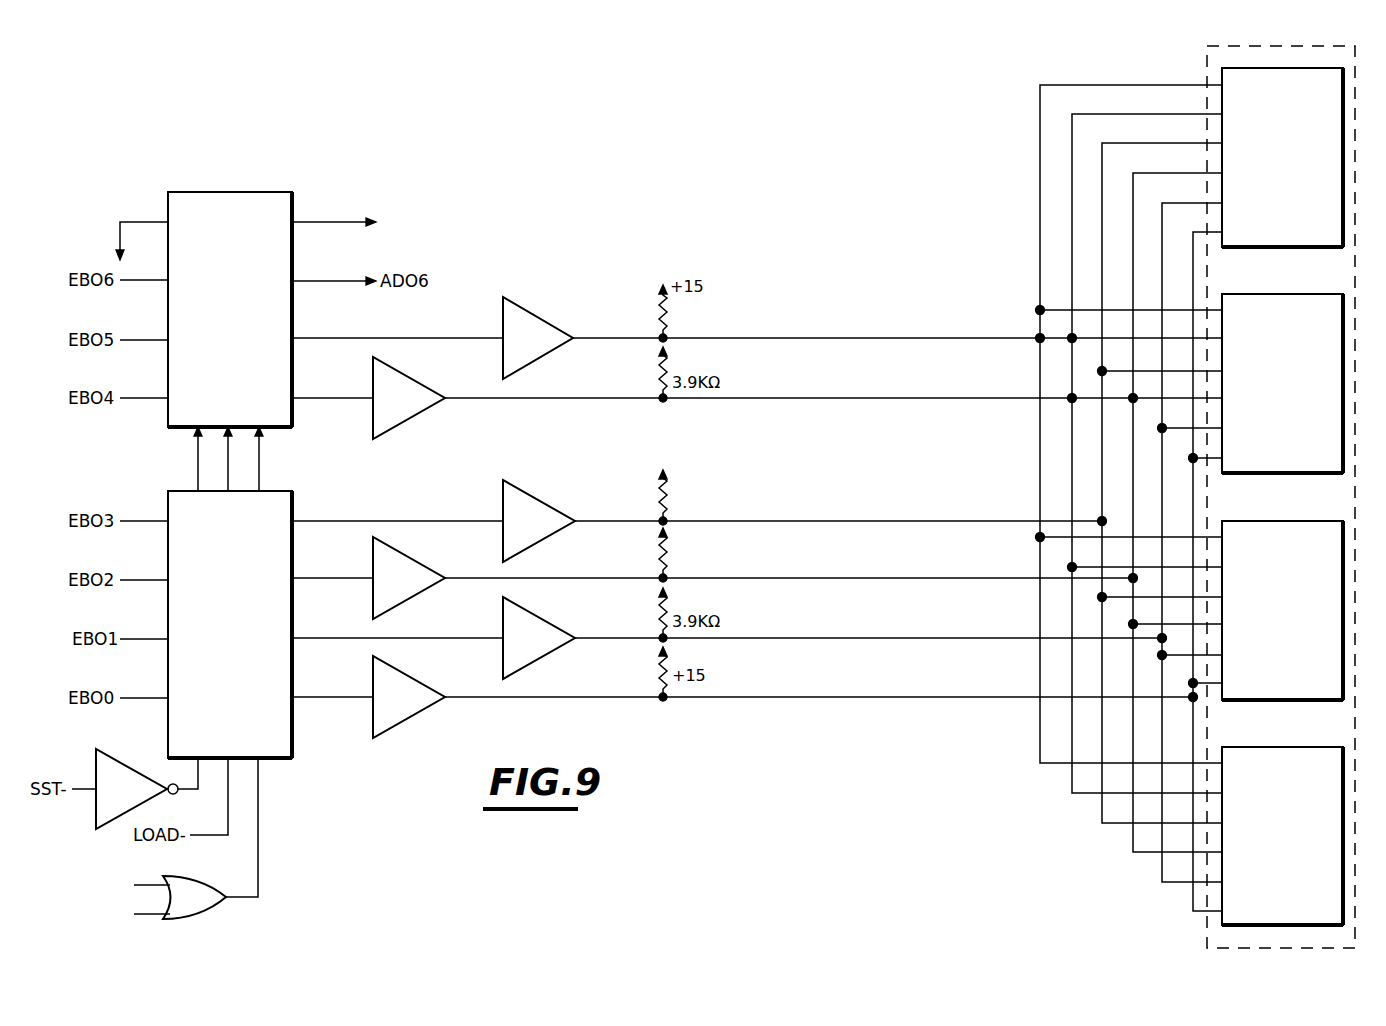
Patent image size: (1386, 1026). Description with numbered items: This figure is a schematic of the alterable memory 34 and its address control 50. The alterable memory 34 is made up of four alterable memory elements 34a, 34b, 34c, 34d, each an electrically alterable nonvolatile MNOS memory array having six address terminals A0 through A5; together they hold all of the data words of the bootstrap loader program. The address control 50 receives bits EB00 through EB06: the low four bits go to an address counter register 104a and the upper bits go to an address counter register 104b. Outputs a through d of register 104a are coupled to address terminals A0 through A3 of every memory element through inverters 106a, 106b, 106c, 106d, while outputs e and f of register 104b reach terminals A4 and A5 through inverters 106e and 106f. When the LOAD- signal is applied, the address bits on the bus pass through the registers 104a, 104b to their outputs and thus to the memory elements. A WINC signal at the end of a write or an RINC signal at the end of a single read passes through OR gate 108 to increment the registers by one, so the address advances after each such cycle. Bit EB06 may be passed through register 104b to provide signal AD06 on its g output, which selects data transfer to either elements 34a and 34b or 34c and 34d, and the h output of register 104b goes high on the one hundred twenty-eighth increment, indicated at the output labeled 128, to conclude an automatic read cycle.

The alterable memory 34 is at (1205, 56).
The alterable memory element 34a is at (1296, 168).
The alterable memory element 34b is at (1296, 396).
The alterable memory element 34c is at (1296, 620).
The alterable memory element 34d is at (1296, 850).
The address control 50 is at (624, 189).
The address counter register 104a is at (252, 619).
The address counter register 104b is at (252, 323).
The inverter 106a is at (413, 709).
The inverter 106b is at (545, 650).
The inverter 106c is at (413, 590).
The inverter 106d is at (545, 533).
The inverter 106e is at (414, 410).
The inverter 106f is at (544, 350).
The OR gate 108 is at (177, 841).
The output line 128 is at (352, 222).